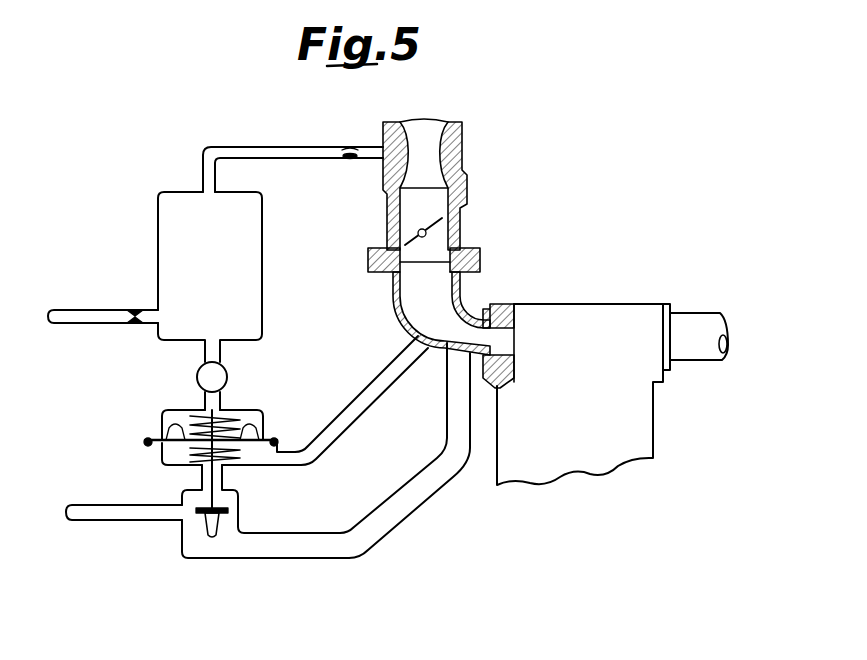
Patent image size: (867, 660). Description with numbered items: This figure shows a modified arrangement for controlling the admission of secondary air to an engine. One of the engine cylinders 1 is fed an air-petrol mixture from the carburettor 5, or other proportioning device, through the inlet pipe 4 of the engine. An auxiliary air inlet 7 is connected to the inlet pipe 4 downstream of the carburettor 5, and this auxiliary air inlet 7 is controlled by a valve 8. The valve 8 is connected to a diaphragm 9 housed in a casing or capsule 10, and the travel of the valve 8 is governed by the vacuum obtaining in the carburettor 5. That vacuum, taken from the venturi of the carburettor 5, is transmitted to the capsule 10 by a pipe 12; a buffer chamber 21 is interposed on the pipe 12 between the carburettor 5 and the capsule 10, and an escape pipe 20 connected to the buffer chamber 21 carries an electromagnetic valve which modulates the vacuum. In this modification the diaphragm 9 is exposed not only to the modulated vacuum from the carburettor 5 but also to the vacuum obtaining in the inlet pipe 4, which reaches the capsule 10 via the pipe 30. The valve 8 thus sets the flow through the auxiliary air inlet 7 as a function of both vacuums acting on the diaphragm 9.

The cylinder 1 is at (627, 445).
The inlet pipe 4 is at (450, 325).
The carburettor 5 is at (436, 160).
The auxiliary air inlet 7 is at (356, 546).
The valve 8 is at (207, 525).
The diaphragm 9 is at (161, 452).
The capsule 10 is at (190, 443).
The pipe 12 is at (250, 151).
The escape pipe 20 is at (114, 327).
The buffer chamber 21 is at (172, 256).
The pipe 30 is at (357, 398).